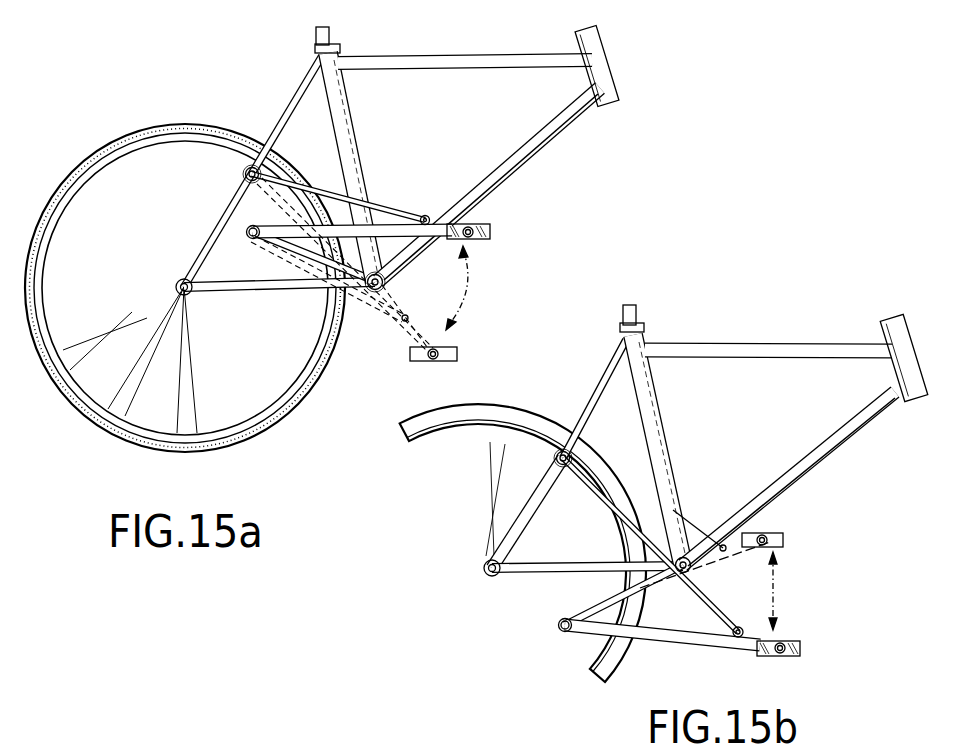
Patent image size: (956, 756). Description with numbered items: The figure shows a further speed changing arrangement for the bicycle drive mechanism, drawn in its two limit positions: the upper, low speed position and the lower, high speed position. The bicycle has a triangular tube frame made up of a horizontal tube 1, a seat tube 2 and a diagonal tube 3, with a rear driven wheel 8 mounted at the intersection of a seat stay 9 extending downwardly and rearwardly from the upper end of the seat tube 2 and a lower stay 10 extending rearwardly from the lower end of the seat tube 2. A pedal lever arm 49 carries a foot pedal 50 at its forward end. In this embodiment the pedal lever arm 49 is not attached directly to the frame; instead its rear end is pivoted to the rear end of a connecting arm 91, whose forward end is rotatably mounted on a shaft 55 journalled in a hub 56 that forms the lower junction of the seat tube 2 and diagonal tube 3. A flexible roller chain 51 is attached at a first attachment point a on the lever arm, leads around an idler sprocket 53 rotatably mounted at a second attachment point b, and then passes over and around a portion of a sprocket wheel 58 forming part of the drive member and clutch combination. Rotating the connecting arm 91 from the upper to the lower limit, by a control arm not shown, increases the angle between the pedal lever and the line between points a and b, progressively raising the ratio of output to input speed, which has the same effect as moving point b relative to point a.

In FIG. 15a, the horizontal tube 1 is at (467, 62).
In FIG. 15b, the horizontal tube 1 is at (758, 347).
In FIG. 15a, the seat tube 2 is at (345, 118).
In FIG. 15b, the seat tube 2 is at (660, 411).
In FIG. 15a, the diagonal tube 3 is at (553, 133).
In FIG. 15b, the diagonal tube 3 is at (850, 428).
In FIG. 15a, the rear driven wheel 8 is at (139, 122).
In FIG. 15b, the rear driven wheel 8 is at (513, 410).
In FIG. 15a, the seat stay 9 is at (294, 105).
In FIG. 15b, the seat stay 9 is at (606, 382).
In FIG. 15a, the lower stay 10 is at (245, 293).
In FIG. 15b, the lower stay 10 is at (548, 578).
In FIG. 15a, the pedal lever arm 49 is at (420, 242).
In FIG. 15b, the pedal lever arm 49 is at (660, 638).
In FIG. 15a, the foot pedal 50 is at (492, 233).
In FIG. 15b, the foot pedal 50 is at (805, 652).
In FIG. 15a, the flexible roller chain 51 is at (393, 208).
In FIG. 15b, the flexible roller chain 51 is at (612, 506).
In FIG. 15a, the idler sprocket 53 is at (256, 181).
In FIG. 15b, the idler sprocket 53 is at (566, 465).
In FIG. 15a, the shaft 55 is at (386, 287).
In FIG. 15b, the shaft 55 is at (683, 565).
In FIG. 15a, the hub 56 is at (386, 278).
In FIG. 15a, the sprocket wheel 58 is at (180, 283).
In FIG. 15b, the sprocket wheel 58 is at (492, 580).
In FIG. 15a, the connecting arm 91 is at (290, 251).
In FIG. 15b, the connecting arm 91 is at (597, 610).
In FIG. 15a, the first attachment point a is at (428, 215).
In FIG. 15b, the first attachment point a is at (737, 640).
In FIG. 15a, the second attachment point b is at (245, 174).
In FIG. 15b, the second attachment point b is at (556, 457).